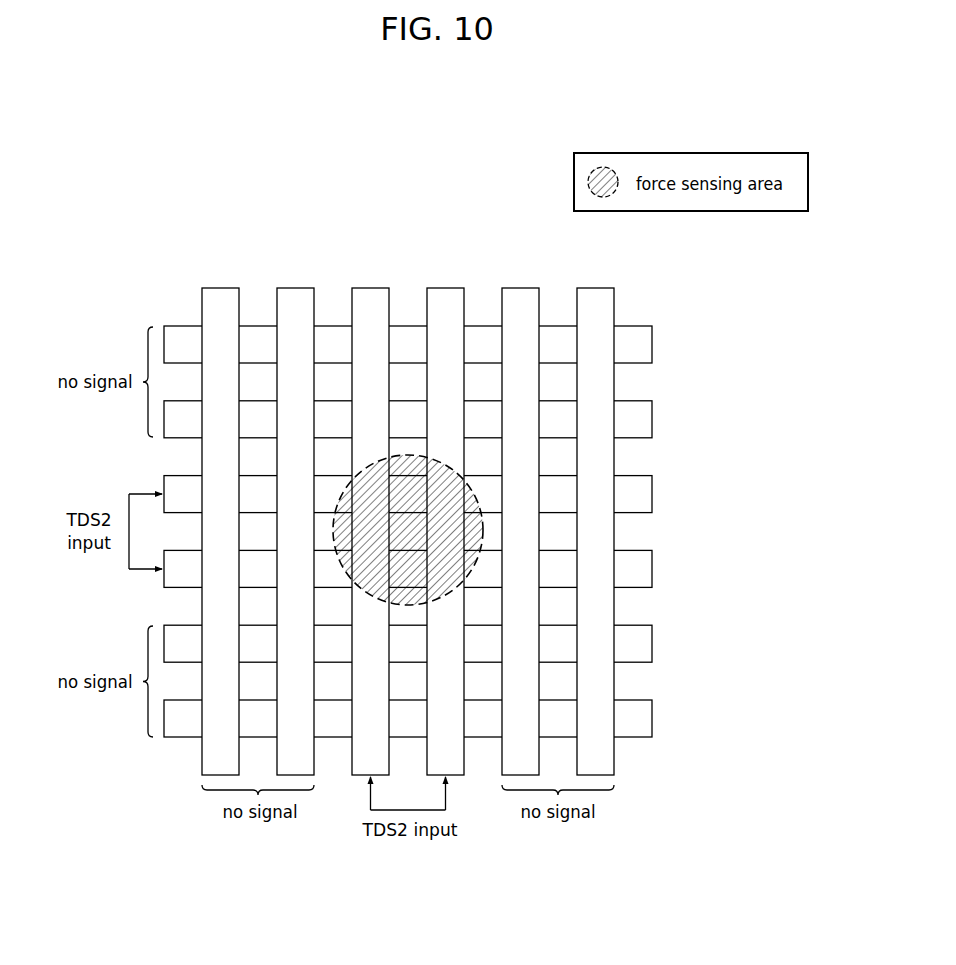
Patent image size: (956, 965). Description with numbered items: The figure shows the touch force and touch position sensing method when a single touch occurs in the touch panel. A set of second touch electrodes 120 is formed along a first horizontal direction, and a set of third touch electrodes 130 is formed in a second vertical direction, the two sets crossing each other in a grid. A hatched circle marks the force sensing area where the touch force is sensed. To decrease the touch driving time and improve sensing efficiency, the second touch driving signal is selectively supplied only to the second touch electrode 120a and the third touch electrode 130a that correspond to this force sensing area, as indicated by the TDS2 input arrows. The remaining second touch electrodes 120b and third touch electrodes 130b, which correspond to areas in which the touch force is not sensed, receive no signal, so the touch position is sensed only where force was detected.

The second touch electrodes 120 is at (470, 531).
The second touch electrode corresponding to force-sensed area 120a is at (663, 494).
The second touch electrode corresponding to no-force area 120b is at (663, 343).
The third touch electrodes 130 is at (408, 484).
The third touch electrode corresponding to force-sensed area 130a is at (408, 507).
The third touch electrode corresponding to no-force area 130b is at (297, 275).